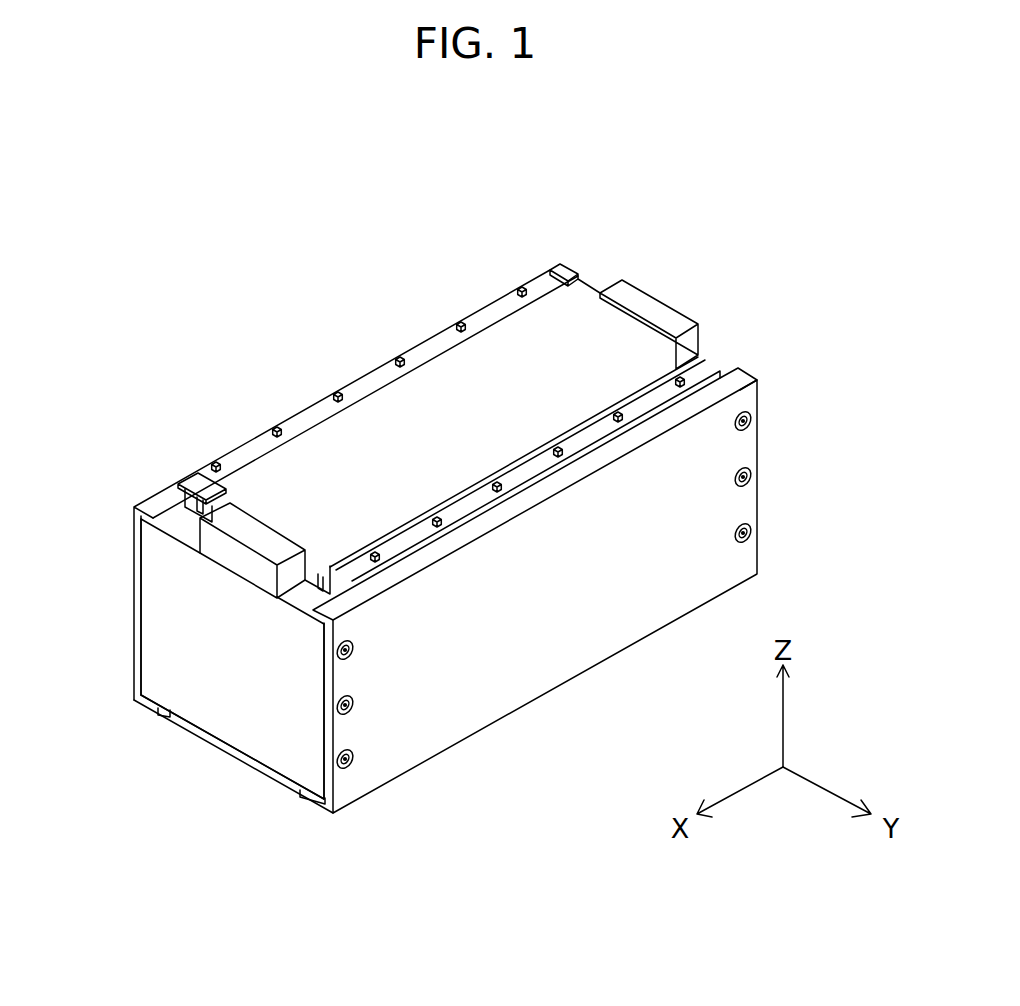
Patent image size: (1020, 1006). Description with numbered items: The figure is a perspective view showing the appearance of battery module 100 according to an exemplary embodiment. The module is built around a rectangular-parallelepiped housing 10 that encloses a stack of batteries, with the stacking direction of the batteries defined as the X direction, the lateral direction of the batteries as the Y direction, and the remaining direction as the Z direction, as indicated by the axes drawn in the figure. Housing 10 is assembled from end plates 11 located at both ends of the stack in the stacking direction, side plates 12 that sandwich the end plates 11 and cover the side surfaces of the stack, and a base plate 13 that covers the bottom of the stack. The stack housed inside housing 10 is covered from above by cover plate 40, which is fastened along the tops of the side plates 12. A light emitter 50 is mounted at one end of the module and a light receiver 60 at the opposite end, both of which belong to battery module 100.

The battery module 100 is at (228, 233).
The housing 10 is at (583, 698).
The end plate 11 is at (198, 690).
The side plate 12 is at (134, 578).
The base plate 13 is at (255, 766).
The cover plate 40 is at (373, 418).
The light emitter 50 is at (650, 302).
The light receiver 60 is at (232, 512).